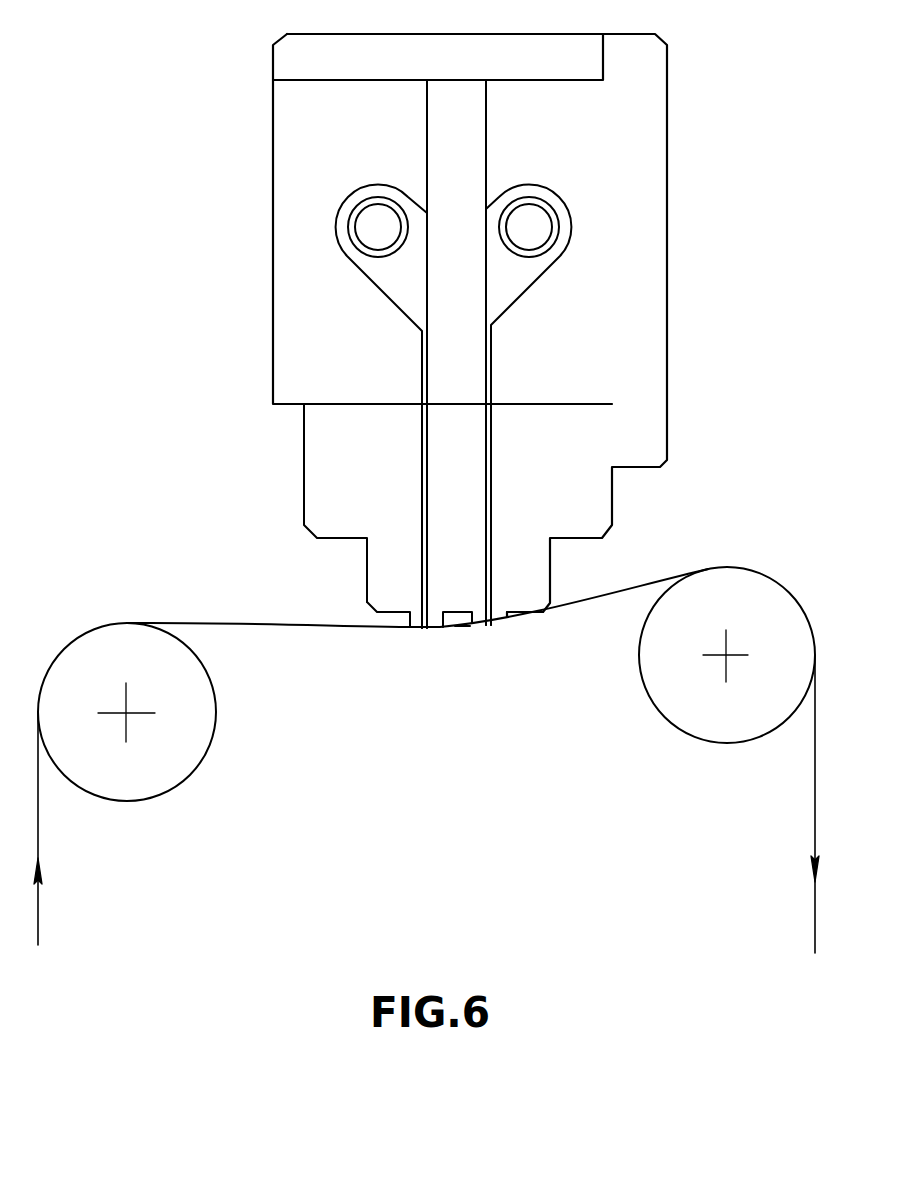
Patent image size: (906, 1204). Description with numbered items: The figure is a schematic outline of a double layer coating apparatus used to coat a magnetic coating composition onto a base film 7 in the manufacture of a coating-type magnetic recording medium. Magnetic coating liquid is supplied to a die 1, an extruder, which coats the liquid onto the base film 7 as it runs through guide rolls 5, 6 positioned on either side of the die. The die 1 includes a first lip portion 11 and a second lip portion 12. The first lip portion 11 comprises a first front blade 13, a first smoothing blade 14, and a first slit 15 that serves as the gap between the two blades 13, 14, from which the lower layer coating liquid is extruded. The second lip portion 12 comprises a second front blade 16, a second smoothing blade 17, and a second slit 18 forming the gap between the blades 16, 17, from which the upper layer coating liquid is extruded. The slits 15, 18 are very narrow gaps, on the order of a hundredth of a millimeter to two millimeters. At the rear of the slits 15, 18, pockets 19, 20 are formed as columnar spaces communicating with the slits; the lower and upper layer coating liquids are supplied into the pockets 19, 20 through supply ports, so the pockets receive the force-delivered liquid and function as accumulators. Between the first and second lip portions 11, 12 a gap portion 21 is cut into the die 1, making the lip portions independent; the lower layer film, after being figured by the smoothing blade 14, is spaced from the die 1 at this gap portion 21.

The die 1 is at (673, 168).
The guide roll 5 is at (180, 768).
The guide roll 6 is at (712, 730).
The base film 7 is at (227, 620).
The first lip portion 11 is at (377, 617).
The second lip portion 12 is at (463, 628).
The first front blade 13 is at (413, 623).
The first smoothing blade 14 is at (435, 628).
The first slit 15 is at (422, 630).
The second front blade 16 is at (480, 628).
The second smoothing blade 17 is at (495, 626).
The second slit 18 is at (495, 630).
The pocket 19 is at (386, 272).
The pocket 20 is at (517, 277).
The gap portion 21 is at (453, 612).